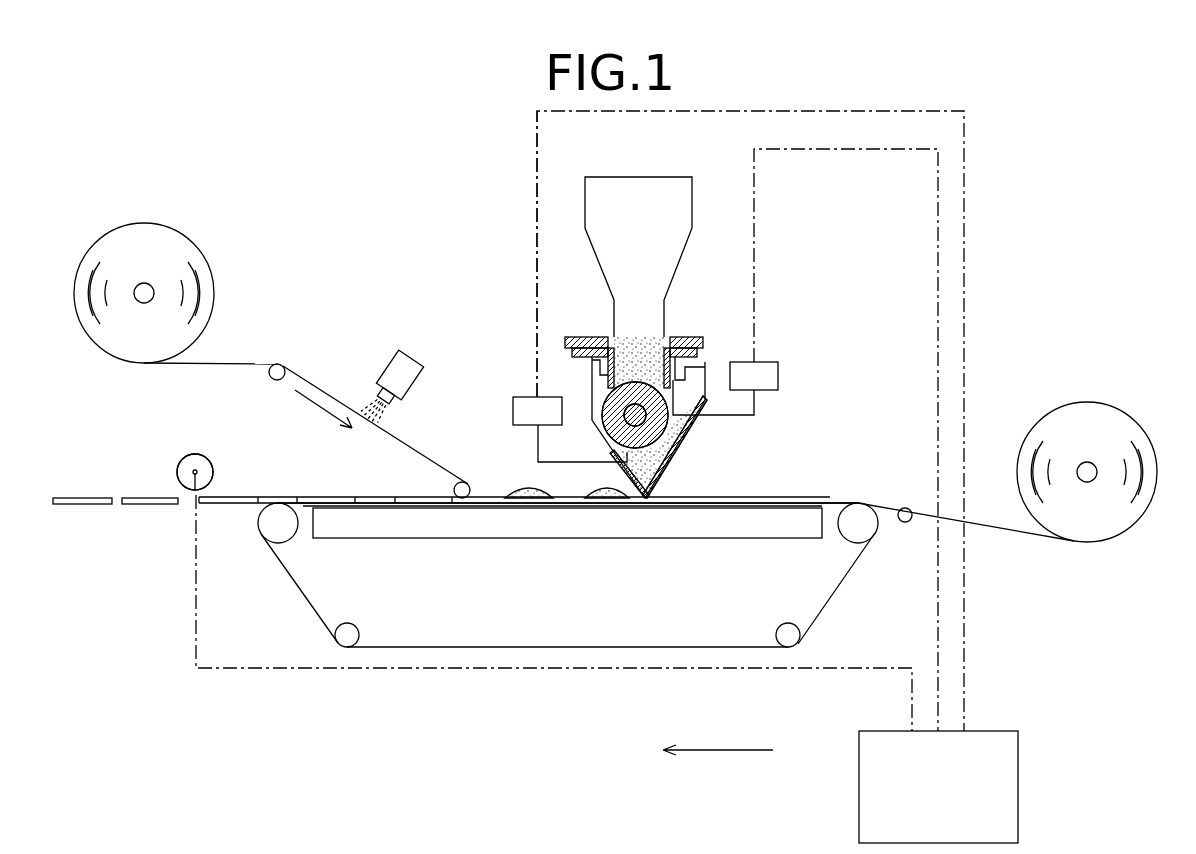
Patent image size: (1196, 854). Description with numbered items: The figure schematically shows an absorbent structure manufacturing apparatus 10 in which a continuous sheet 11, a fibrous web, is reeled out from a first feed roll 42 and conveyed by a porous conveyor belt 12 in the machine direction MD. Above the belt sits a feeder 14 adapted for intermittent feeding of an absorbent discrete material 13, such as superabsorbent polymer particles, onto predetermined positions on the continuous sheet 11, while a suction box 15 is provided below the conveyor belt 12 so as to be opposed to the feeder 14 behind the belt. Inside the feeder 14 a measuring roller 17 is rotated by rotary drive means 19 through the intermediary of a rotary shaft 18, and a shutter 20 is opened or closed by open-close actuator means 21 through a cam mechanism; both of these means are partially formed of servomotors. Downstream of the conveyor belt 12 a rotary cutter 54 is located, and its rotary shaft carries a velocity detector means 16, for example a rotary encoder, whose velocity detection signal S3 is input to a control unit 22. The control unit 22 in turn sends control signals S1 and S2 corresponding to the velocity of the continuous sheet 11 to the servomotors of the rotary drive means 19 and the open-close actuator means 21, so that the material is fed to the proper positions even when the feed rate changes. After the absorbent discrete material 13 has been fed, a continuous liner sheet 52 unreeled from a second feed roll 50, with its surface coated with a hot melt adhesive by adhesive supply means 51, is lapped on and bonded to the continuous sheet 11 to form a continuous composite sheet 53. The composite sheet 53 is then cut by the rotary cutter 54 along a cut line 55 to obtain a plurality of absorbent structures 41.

The absorbent structure manufacturing apparatus 10 is at (998, 182).
The continuous sheet 11 is at (990, 525).
The conveyor belt 12 is at (655, 647).
The absorbent discrete material 13 is at (663, 482).
The feeder 14 is at (708, 200).
The suction box 15 is at (493, 528).
The velocity detector means 16 is at (197, 471).
The measuring roller 17 is at (607, 400).
The rotary shaft 18 is at (643, 423).
The rotary drive means 19 is at (778, 376).
The shutter 20 is at (625, 473).
The open-close actuator means 21 is at (513, 405).
The control unit 22 is at (1000, 788).
The absorbent structure 41 is at (143, 498).
The first feed roll 42 is at (1072, 420).
The second feed roll 50 is at (150, 240).
The adhesive supply means 51 is at (397, 373).
The continuous liner sheet 52 is at (243, 364).
The continuous composite sheet 53 is at (375, 496).
The rotary cutter 54 is at (188, 462).
The cut line 55 is at (458, 508).
The control signal S1 is at (938, 297).
The control signal S2 is at (537, 272).
The velocity detection signal S3 is at (196, 562).
The machine direction MD is at (717, 752).